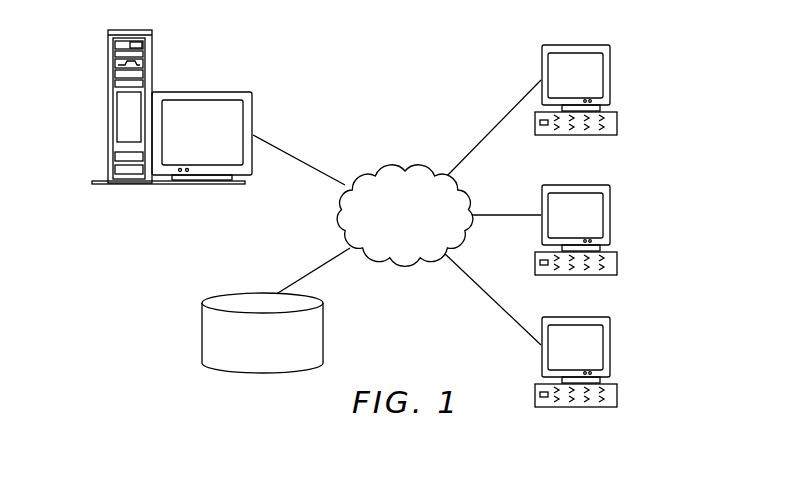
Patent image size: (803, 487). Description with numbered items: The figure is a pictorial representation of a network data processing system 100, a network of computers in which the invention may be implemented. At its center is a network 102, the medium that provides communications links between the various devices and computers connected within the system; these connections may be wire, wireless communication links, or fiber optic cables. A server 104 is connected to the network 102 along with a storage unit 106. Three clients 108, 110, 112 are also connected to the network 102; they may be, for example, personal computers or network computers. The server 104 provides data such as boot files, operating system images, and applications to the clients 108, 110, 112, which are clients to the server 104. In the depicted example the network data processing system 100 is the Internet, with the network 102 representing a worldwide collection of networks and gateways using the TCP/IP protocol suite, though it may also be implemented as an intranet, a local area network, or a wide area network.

The network data processing system 100 is at (456, 57).
The network 102 is at (378, 166).
The server 104 is at (107, 108).
The storage unit 106 is at (202, 333).
The client 108 is at (610, 80).
The client 110 is at (610, 213).
The client 112 is at (610, 350).